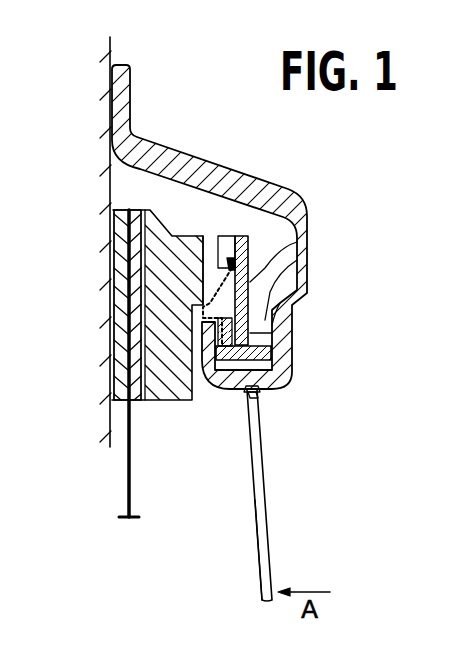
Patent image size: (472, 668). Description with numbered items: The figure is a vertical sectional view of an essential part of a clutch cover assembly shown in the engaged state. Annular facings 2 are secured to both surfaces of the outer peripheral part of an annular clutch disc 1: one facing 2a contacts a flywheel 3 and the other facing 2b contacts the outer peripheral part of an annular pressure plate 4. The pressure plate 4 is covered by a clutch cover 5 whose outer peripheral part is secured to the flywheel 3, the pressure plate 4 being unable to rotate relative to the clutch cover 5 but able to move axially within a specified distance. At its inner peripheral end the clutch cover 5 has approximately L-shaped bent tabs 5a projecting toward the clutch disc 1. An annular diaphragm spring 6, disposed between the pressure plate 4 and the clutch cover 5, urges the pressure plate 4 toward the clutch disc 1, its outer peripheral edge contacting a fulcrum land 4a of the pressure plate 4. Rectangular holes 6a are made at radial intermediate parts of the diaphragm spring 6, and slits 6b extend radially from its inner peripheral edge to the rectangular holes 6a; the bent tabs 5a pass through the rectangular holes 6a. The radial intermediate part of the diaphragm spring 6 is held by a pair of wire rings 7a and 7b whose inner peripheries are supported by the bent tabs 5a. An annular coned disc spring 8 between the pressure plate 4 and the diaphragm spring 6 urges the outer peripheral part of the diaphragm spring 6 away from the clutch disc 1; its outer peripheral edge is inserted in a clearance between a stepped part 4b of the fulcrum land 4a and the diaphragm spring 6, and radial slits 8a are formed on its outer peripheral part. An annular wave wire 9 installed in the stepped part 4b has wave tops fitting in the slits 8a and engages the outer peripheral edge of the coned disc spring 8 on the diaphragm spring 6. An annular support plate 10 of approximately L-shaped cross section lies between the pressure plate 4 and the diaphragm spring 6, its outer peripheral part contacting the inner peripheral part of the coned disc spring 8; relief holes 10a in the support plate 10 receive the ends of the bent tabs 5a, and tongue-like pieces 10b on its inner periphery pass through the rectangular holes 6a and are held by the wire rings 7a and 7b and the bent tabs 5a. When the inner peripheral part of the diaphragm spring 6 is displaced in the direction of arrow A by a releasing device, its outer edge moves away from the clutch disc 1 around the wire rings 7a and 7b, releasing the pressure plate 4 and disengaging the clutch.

The clutch disc 1 is at (127, 462).
The facings 2 is at (127, 305).
The facing 2a is at (114, 366).
The facing 2b is at (135, 405).
The flywheel 3 is at (113, 53).
The pressure plate 4 is at (178, 403).
The fulcrum land 4a is at (206, 241).
The stepped part 4b is at (229, 260).
The clutch cover 5 is at (291, 190).
The bent tabs 5a is at (258, 391).
The diaphragm spring 6 is at (266, 496).
The rectangular holes 6a is at (258, 398).
The slits 6b is at (264, 548).
The wire ring 7a is at (285, 300).
The wire ring 7b is at (285, 335).
The coned disc spring 8 is at (292, 260).
The slits 8a is at (288, 230).
The wave wire 9 is at (240, 250).
The support plate 10 is at (200, 304).
The relief holes 10a is at (148, 350).
The tongue-like pieces 10b is at (272, 372).